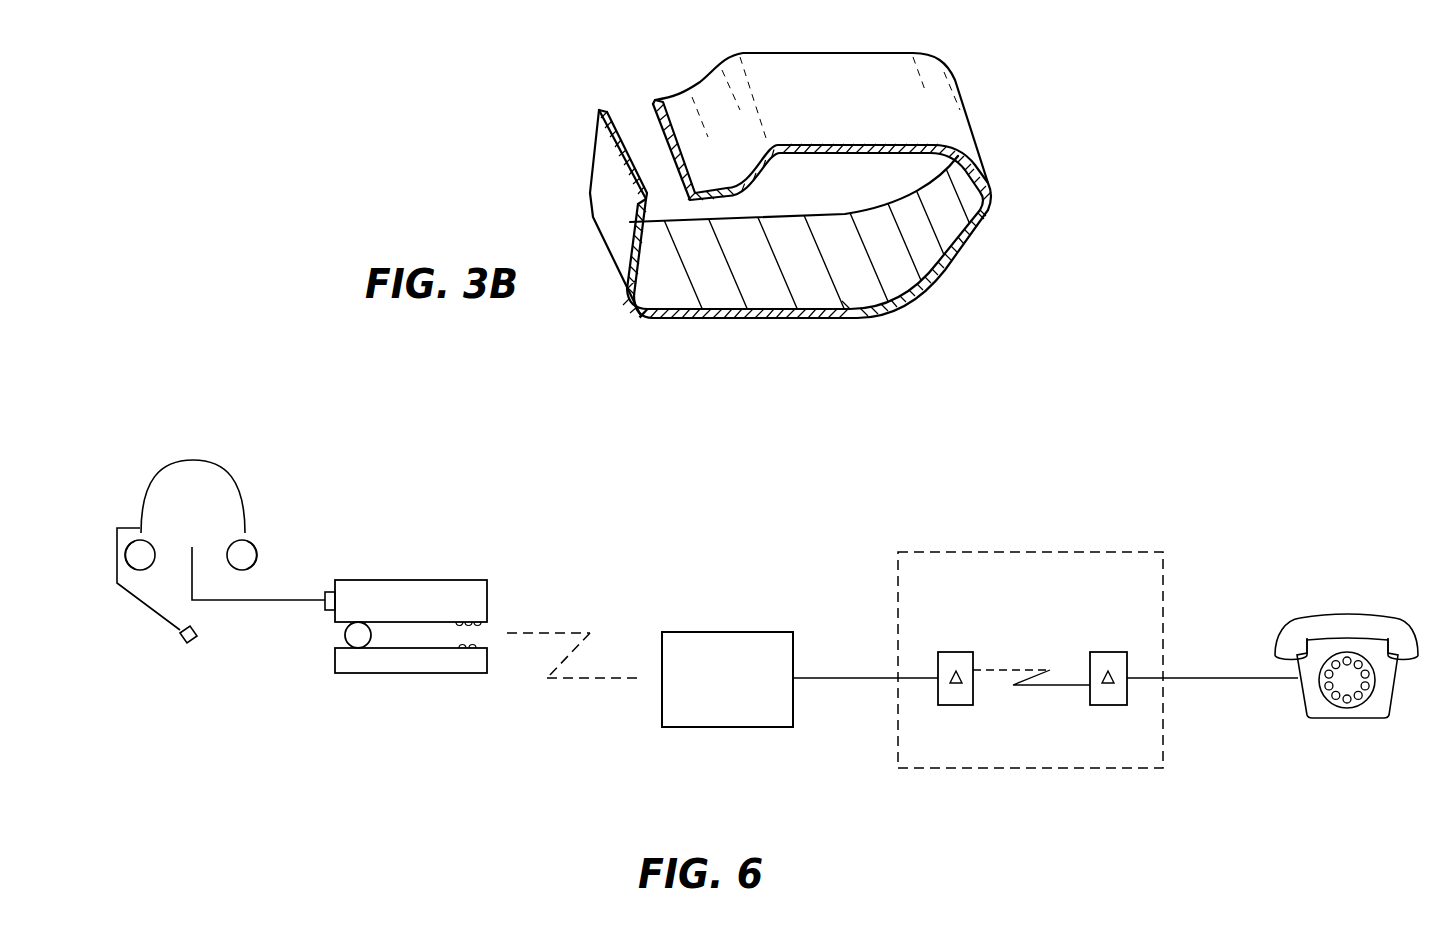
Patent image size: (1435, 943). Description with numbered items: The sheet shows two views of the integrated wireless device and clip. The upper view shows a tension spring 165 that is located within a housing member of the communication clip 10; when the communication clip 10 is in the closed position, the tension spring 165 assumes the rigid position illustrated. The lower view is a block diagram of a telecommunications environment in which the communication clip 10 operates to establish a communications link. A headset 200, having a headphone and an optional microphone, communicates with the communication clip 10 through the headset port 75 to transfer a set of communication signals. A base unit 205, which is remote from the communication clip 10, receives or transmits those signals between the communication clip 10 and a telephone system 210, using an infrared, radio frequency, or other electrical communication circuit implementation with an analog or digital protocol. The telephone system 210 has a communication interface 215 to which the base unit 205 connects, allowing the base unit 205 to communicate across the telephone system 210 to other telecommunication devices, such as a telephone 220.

In FIG. 6, the communication clip 10 is at (406, 697).
In FIG. 6, the headset port 75 is at (327, 608).
In FIG. 3B, the tension spring 165 is at (1030, 112).
In FIG. 6, the headset 200 is at (243, 463).
In FIG. 6, the base unit 205 is at (720, 727).
In FIG. 6, the telephone system 210 is at (1026, 707).
In FIG. 6, the communication interface 215 is at (938, 652).
In FIG. 6, the telephone 220 is at (1348, 750).